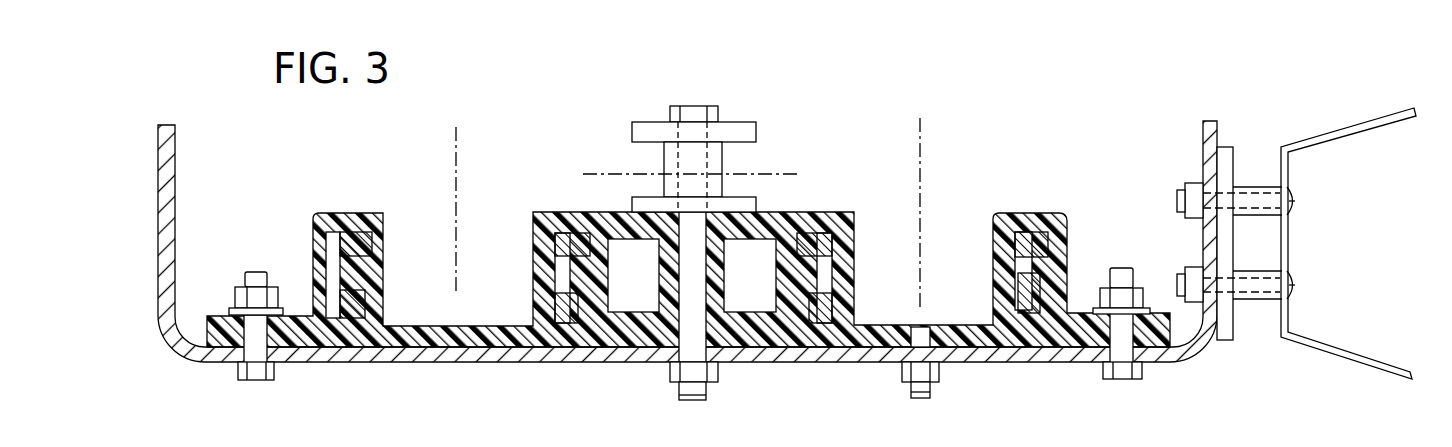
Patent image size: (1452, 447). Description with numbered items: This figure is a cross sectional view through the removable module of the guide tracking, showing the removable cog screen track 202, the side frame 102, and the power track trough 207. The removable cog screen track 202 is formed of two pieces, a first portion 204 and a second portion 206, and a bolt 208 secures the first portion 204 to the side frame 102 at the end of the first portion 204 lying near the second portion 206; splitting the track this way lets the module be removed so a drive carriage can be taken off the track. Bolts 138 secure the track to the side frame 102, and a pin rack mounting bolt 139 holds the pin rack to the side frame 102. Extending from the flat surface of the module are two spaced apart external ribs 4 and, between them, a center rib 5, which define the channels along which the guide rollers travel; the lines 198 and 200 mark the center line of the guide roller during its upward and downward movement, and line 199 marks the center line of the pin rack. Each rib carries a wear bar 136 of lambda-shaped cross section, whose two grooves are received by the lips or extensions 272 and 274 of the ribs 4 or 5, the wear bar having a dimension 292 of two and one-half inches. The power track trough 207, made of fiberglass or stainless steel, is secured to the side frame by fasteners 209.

The side frame 102 is at (178, 148).
The wear bar 136 is at (349, 213).
The bolts 138 is at (240, 373).
The pin rack mounting bolt 139 is at (716, 110).
The center line of guide roller 198 is at (458, 150).
The center line of pin rack 199 is at (606, 172).
The center line of guide roller 200 is at (922, 126).
The removable cog screen track 202 is at (950, 308).
The first portion 204 is at (943, 352).
The second portion 206 is at (990, 357).
The power track trough 207 is at (1346, 358).
The bolt 208 is at (908, 393).
The fasteners 209 is at (1292, 198).
The lip 272 is at (355, 251).
The lip 274 is at (355, 303).
The dimension 292 is at (1030, 232).
The external ribs 4 is at (314, 228).
The center rib 5 is at (604, 327).